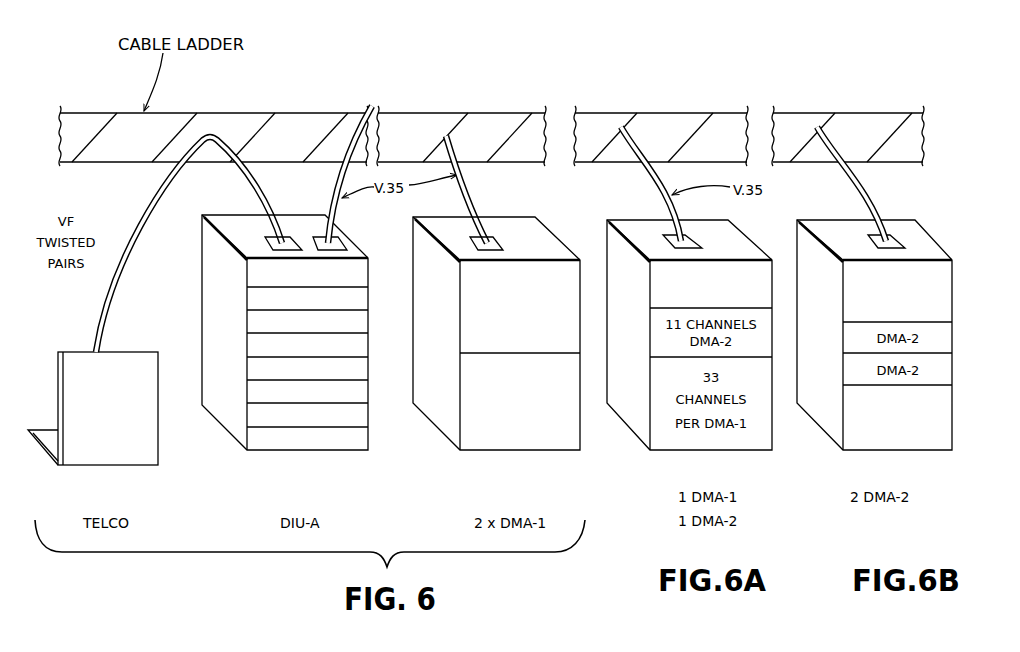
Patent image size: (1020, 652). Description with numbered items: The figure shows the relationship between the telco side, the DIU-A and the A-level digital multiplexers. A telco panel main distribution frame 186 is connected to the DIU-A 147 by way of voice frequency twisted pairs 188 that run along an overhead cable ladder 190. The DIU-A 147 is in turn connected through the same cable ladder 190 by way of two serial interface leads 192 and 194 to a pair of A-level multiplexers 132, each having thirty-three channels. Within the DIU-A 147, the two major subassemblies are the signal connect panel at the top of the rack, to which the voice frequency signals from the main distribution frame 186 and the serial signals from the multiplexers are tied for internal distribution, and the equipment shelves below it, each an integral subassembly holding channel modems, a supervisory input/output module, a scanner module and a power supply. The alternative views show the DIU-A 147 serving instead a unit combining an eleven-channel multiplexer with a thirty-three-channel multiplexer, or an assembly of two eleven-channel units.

In FIG. 6, the cable ladder 190 is at (297, 130).
In FIG. 6A, the cable ladder 190 is at (685, 128).
In FIG. 6B, the cable ladder 190 is at (872, 128).
In FIG. 6, the voice frequency twisted pairs 188 is at (131, 242).
In FIG. 6, the main distribution frame 186 is at (145, 364).
In FIG. 6, the DIU-A 147 is at (227, 408).
In FIG. 6, the V.35 lead 192 is at (333, 188).
In FIG. 6, the V.35 lead 194 is at (476, 200).
In FIG. 6, the DMA-1 multiplexer 132 is at (443, 412).